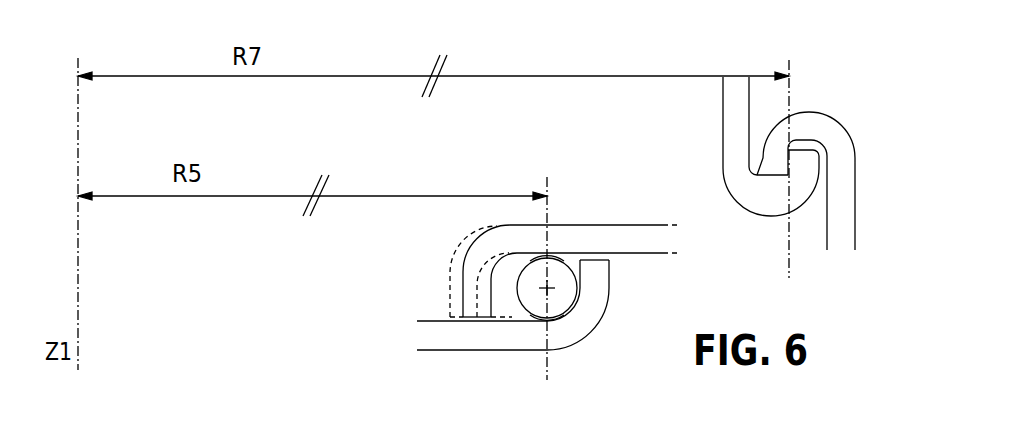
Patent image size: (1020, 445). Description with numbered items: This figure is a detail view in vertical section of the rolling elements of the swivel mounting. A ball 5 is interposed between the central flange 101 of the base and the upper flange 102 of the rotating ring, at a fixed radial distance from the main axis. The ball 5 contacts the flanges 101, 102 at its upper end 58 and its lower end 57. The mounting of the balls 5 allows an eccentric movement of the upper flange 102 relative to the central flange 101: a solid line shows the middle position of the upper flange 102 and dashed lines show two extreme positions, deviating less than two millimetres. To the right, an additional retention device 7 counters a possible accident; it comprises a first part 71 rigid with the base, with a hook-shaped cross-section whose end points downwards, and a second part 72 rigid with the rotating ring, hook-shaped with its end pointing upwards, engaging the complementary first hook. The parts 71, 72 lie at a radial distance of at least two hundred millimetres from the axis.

The rolling elements 5 is at (558, 305).
The additional retention device 7 is at (805, 90).
The lower end 57 is at (548, 322).
The upper end 58 is at (548, 257).
The first part 71 is at (838, 118).
The second part 72 is at (722, 140).
The central flange 101 is at (458, 350).
The upper flange 102 is at (613, 224).